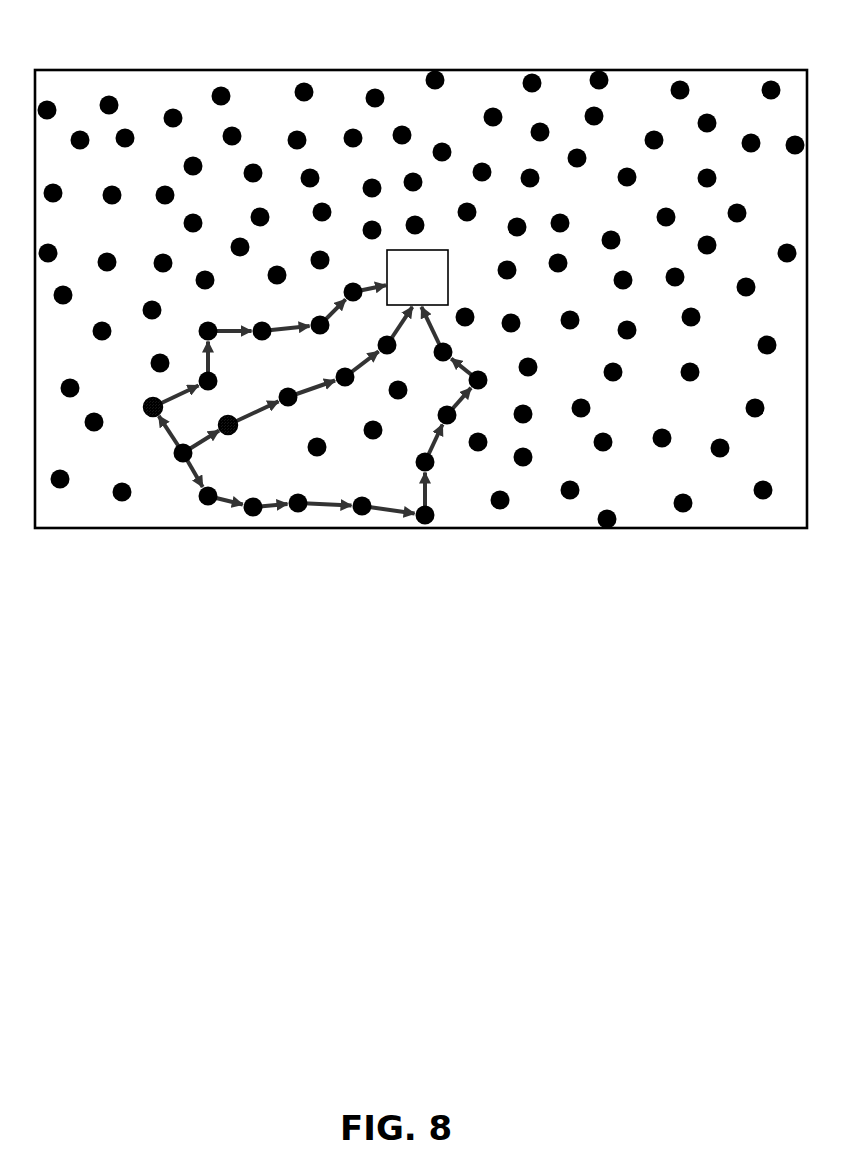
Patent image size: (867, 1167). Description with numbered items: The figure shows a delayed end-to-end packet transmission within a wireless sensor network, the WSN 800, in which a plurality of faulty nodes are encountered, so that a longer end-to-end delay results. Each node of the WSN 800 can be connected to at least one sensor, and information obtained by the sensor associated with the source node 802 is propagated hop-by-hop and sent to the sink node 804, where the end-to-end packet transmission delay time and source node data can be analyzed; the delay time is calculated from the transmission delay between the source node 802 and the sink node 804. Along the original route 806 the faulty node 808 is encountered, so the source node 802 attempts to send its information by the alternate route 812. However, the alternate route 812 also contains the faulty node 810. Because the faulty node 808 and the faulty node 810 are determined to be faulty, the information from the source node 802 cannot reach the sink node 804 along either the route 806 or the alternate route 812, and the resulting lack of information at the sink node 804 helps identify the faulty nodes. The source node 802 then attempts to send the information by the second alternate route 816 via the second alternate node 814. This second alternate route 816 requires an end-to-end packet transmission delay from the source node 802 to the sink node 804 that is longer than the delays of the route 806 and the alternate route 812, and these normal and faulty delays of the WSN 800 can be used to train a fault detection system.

The WSN 800 is at (154, 67).
The source node 802 is at (176, 466).
The sink node 804 is at (438, 265).
The route 806 is at (311, 392).
The faulty node 808 is at (236, 437).
The faulty node 810 is at (143, 417).
The alternate route 812 is at (229, 322).
The second alternate node 814 is at (215, 505).
The second alternate route 816 is at (336, 494).